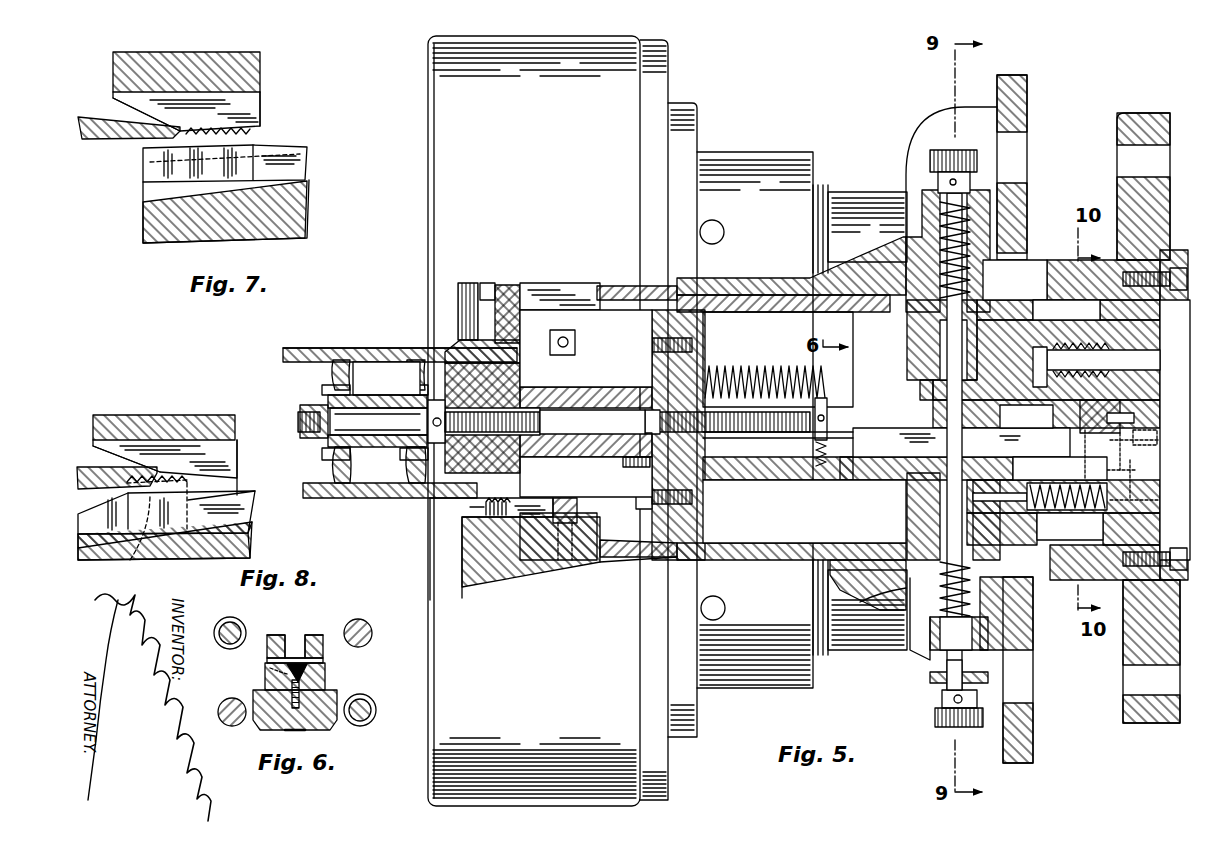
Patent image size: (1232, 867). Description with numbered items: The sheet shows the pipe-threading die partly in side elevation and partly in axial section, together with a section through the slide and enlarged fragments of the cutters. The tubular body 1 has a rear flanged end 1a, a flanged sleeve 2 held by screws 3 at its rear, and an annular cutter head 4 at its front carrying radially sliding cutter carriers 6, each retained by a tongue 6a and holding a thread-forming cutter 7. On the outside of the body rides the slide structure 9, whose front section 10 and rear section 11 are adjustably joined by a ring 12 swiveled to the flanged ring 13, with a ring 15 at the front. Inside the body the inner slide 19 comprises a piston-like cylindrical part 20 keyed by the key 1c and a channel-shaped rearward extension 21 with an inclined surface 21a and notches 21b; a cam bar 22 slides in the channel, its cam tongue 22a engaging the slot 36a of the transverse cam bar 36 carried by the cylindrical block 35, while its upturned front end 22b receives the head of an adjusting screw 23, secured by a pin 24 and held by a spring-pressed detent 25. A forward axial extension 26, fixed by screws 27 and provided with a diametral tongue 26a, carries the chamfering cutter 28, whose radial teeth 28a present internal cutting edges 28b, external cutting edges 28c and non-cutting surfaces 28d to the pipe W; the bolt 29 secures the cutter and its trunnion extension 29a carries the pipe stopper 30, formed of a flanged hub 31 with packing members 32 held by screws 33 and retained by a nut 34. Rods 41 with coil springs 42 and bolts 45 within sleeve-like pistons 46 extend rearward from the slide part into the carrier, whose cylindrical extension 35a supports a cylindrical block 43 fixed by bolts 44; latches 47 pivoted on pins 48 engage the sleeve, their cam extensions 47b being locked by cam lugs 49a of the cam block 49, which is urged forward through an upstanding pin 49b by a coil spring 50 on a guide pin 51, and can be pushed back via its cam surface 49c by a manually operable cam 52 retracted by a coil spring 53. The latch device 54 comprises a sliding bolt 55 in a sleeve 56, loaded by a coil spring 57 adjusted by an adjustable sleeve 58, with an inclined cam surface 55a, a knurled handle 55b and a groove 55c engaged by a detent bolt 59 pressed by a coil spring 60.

In FIG. 5, the tubular body 1 is at (1058, 260).
In FIG. 5, the rear flanged end 1a is at (1140, 113).
In FIG. 5, the key 1c is at (795, 312).
In FIG. 5, the flanged sleeve 2 is at (1188, 302).
In FIG. 5, the screws 3 is at (1188, 278).
In FIG. 5, the annular cutter head 4 is at (626, 286).
In FIG. 7, the cutter carrier 6 is at (158, 236).
In FIG. 8, the cutter carrier 6 is at (222, 550).
In FIG. 5, the cutter carrier 6 is at (525, 297).
In FIG. 5, the tongue 6a is at (490, 290).
In FIG. 7, the thread-forming cutter 7 is at (156, 172).
In FIG. 8, the thread-forming cutter 7 is at (165, 540).
In FIG. 5, the thread-forming cutter 7 is at (490, 516).
In FIG. 5, the slide structure 9 is at (824, 188).
In FIG. 5, the front section 10 is at (668, 82).
In FIG. 5, the rear section 11 is at (862, 196).
In FIG. 5, the ring 12 is at (760, 152).
In FIG. 5, the flanged ring 13 is at (698, 122).
In FIG. 5, the ring 15 is at (428, 97).
In FIG. 6, the inner slide 19 is at (325, 630).
In FIG. 5, the inner slide 19 is at (712, 340).
In FIG. 5, the piston-like cylindrical part 20 is at (705, 524).
In FIG. 6, the rearward extension 21 is at (262, 728).
In FIG. 5, the rearward extension 21 is at (738, 482).
In FIG. 5, the inclined surface 21a is at (955, 433).
In FIG. 6, the notches 21b is at (292, 735).
In FIG. 5, the notches 21b is at (785, 482).
In FIG. 6, the cam bar 22 is at (326, 735).
In FIG. 5, the cam bar 22 is at (1060, 468).
In FIG. 6, the cam tongue 22a is at (268, 666).
In FIG. 5, the cam tongue 22a is at (887, 443).
In FIG. 6, the upturned front end 22b is at (280, 636).
In FIG. 6, the adjusting screw 23 is at (308, 673).
In FIG. 5, the adjusting screw 23 is at (744, 434).
In FIG. 6, the pin 24 is at (325, 660).
In FIG. 5, the pin 24 is at (855, 370).
In FIG. 6, the spring-pressed detent 25 is at (290, 683).
In FIG. 5, the spring-pressed detent 25 is at (815, 442).
In FIG. 5, the forward axial extension 26 is at (583, 457).
In FIG. 5, the diametral tongue 26a is at (492, 418).
In FIG. 5, the screws 27 is at (636, 345).
In FIG. 7, the chamfering cutter 28 is at (156, 63).
In FIG. 8, the chamfering cutter 28 is at (160, 416).
In FIG. 5, the chamfering cutter 28 is at (598, 300).
In FIG. 7, the radial teeth 28a is at (246, 102).
In FIG. 8, the radial teeth 28a is at (238, 476).
In FIG. 5, the radial teeth 28a is at (462, 348).
In FIG. 7, the internal cutting edges 28b is at (172, 129).
In FIG. 8, the internal cutting edges 28b is at (120, 434).
In FIG. 5, the internal cutting edges 28b is at (520, 362).
In FIG. 7, the external cutting edges 28c is at (185, 133).
In FIG. 8, the external cutting edges 28c is at (133, 545).
In FIG. 5, the external cutting edges 28c is at (468, 300).
In FIG. 7, the non-cutting surfaces 28d is at (236, 127).
In FIG. 8, the non-cutting surfaces 28d is at (170, 470).
In FIG. 5, the non-cutting surfaces 28d is at (538, 306).
In FIG. 5, the bolt 29 is at (300, 420).
In FIG. 5, the forward trunnion extension 29a is at (405, 440).
In FIG. 5, the pipe stopper 30 is at (330, 364).
In FIG. 5, the flanged hub 31 is at (372, 396).
In FIG. 5, the annular packing members 32 is at (340, 484).
In FIG. 5, the screws 33 is at (326, 460).
In FIG. 5, the nut 34 is at (306, 406).
In FIG. 5, the cylindrical block 35 is at (1018, 300).
In FIG. 5, the cylindrical extension 35a is at (1066, 288).
In FIG. 5, the cam bar 36 is at (1010, 446).
In FIG. 5, the slot 36a is at (1005, 447).
In FIG. 6, the rods 41 is at (244, 628).
In FIG. 5, the rods 41 is at (740, 362).
In FIG. 6, the coil springs 42 is at (218, 628).
In FIG. 5, the coil springs 42 is at (793, 362).
In FIG. 5, the cylindrical block 43 is at (1180, 385).
In FIG. 5, the bolts 44 is at (1188, 327).
In FIG. 6, the bolts 45 is at (372, 633).
In FIG. 6, the sleeve-like piston 46 is at (365, 622).
In FIG. 5, the latches 47 is at (1120, 412).
In FIG. 5, the cam extension 47b is at (1136, 462).
In FIG. 5, the pins 48 is at (1158, 440).
In FIG. 5, the cam block 49 is at (1002, 385).
In FIG. 5, the cam lug 49a is at (1110, 448).
In FIG. 5, the upstanding pin 49b is at (1033, 366).
In FIG. 5, the cam surface 49c is at (924, 394).
In FIG. 5, the coil spring 50 is at (1066, 310).
In FIG. 5, the guide pin 51 is at (1160, 358).
In FIG. 5, the manually operable cam 52 is at (968, 334).
In FIG. 5, the coil spring 53 is at (968, 278).
In FIG. 5, the latch device 54 is at (932, 637).
In FIG. 5, the sliding bolt 55 is at (940, 540).
In FIG. 5, the inclined cam surface 55a is at (940, 500).
In FIG. 5, the knurled handle 55b is at (938, 722).
In FIG. 5, the groove 55c is at (935, 522).
In FIG. 5, the sleeve 56 is at (885, 592).
In FIG. 5, the coil spring 57 is at (980, 578).
In FIG. 5, the adjustable sleeve 58 is at (932, 680).
In FIG. 5, the detent bolt 59 is at (1015, 500).
In FIG. 5, the coil spring 60 is at (1070, 526).
In FIG. 7, the pipe W is at (101, 139).
In FIG. 8, the pipe W is at (88, 467).
In FIG. 5, the pipe W is at (362, 348).